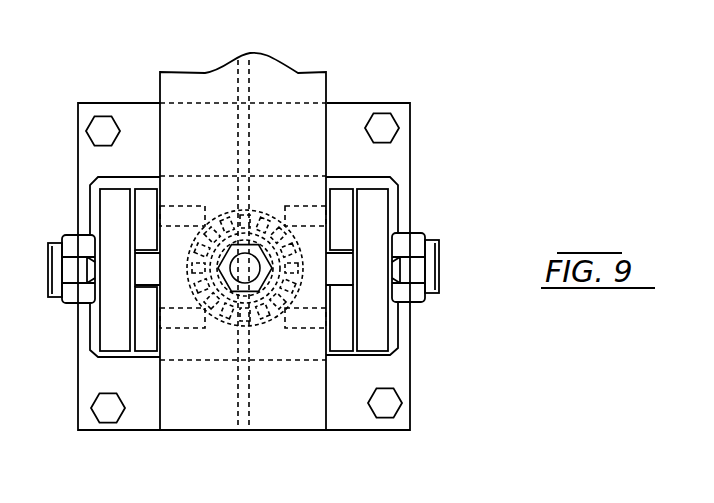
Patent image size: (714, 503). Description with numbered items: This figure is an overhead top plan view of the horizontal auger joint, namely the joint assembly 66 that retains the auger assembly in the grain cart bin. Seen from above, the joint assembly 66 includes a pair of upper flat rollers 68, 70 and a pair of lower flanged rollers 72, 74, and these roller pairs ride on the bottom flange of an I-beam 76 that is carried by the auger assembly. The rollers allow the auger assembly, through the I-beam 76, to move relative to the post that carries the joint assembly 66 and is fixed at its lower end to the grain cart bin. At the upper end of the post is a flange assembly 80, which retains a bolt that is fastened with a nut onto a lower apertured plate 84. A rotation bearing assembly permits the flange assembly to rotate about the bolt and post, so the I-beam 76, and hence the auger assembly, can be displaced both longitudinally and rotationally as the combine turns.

The joint assembly 66 is at (468, 128).
The upper flat roller 68 is at (183, 310).
The upper flat roller 70 is at (305, 310).
The lower flanged roller 72 is at (148, 203).
The lower flanged roller 74 is at (340, 197).
The I-beam 76 is at (280, 80).
The flange assembly 80 is at (396, 103).
The lower apertured plate 84 is at (90, 331).